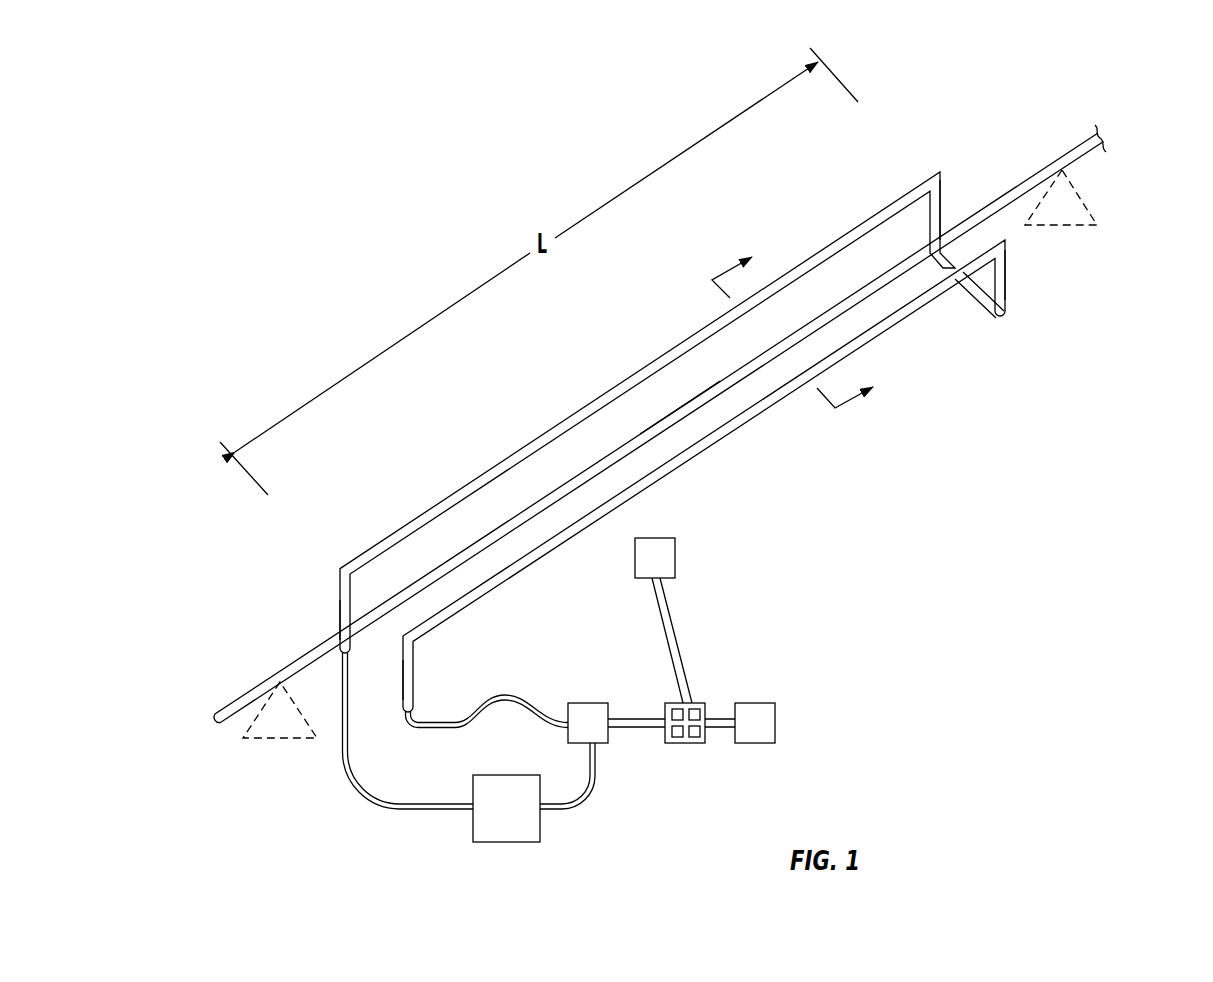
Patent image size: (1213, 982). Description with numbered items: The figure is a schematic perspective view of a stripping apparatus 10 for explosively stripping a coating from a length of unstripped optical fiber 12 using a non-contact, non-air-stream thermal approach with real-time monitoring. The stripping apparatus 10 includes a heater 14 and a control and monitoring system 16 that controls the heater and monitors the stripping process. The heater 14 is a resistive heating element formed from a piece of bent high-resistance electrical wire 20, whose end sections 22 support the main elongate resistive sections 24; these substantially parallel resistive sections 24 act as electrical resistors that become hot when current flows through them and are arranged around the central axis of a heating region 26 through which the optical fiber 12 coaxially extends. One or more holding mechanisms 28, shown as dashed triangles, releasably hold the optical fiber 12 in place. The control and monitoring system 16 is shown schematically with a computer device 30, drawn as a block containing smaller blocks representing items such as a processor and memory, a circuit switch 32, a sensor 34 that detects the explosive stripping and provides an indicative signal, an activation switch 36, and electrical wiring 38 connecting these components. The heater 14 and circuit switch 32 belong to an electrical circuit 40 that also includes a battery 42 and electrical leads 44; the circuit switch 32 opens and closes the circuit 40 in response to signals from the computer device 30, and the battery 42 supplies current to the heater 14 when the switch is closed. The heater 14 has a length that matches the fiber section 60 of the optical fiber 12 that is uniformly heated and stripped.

The stripping apparatus 10 is at (340, 304).
The optical fiber 12 is at (1077, 138).
The heater 14 is at (1045, 295).
The control and monitoring system 16 is at (820, 556).
The high-resistance electrical wire 20 is at (698, 324).
The end sections 22 is at (943, 202).
The resistive sections 24 is at (548, 430).
The heating region 26 is at (887, 250).
The holding mechanisms 28 is at (1092, 212).
The computer device 30 is at (680, 747).
The circuit switch 32 is at (583, 702).
The sensor 34 is at (677, 553).
The activation switch 36 is at (777, 722).
The electrical wiring 38 is at (643, 715).
The electrical circuit 40 is at (343, 832).
The battery 42 is at (516, 821).
The electrical leads 44 is at (473, 720).
The fiber section 60 is at (682, 406).